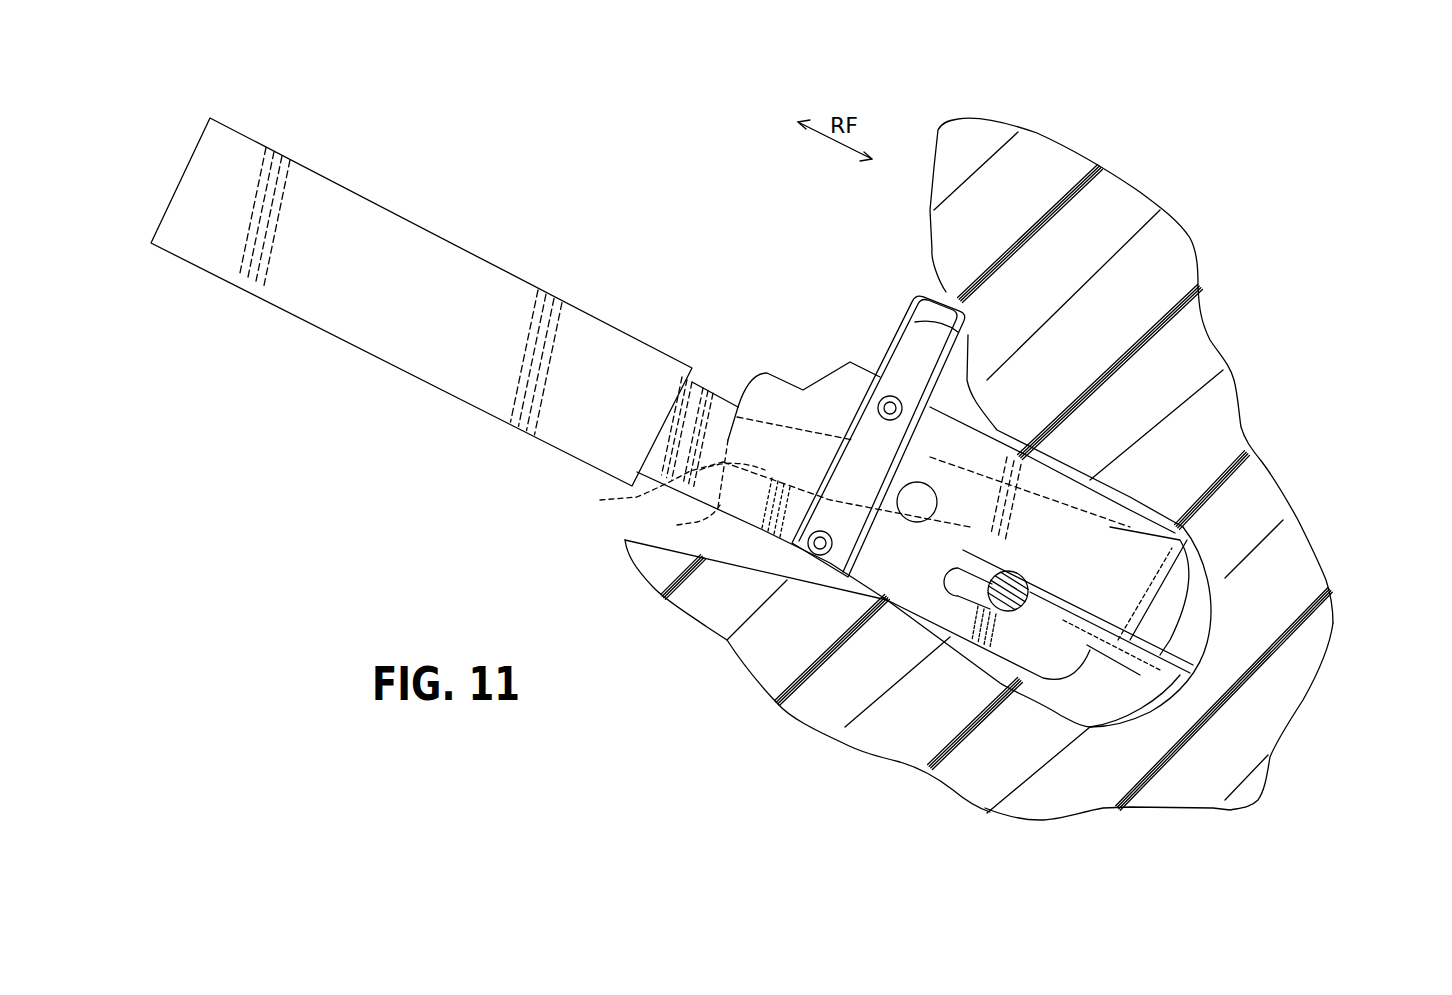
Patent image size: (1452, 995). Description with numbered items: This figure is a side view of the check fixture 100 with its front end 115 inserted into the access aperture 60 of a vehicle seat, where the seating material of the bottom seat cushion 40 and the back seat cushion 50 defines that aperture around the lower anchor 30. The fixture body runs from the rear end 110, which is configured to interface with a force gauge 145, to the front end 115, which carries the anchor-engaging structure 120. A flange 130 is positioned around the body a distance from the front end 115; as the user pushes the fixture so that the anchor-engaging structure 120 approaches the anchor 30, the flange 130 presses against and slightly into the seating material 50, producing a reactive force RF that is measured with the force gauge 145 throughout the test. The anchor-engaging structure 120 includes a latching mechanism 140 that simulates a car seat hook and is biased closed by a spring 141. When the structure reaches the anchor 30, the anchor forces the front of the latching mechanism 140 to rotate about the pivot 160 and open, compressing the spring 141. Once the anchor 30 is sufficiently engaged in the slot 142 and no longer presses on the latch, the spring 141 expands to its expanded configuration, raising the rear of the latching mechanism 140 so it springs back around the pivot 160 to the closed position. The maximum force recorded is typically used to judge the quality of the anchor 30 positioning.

The lower anchor 30 is at (963, 532).
The bottom seat cushion 40 is at (840, 712).
The back seat cushion 50 is at (1200, 325).
The access aperture 60 is at (1103, 697).
The check fixture 100 is at (808, 275).
The rear end 110 is at (700, 405).
The front end 115 is at (1140, 525).
The anchor-engaging structure 120 is at (1143, 590).
The flange 130 is at (920, 327).
The latching mechanism 140 is at (1110, 535).
The spring 141 is at (700, 499).
The slot 142 is at (970, 580).
The force gauge 145 is at (455, 350).
The pivot 160 is at (917, 522).